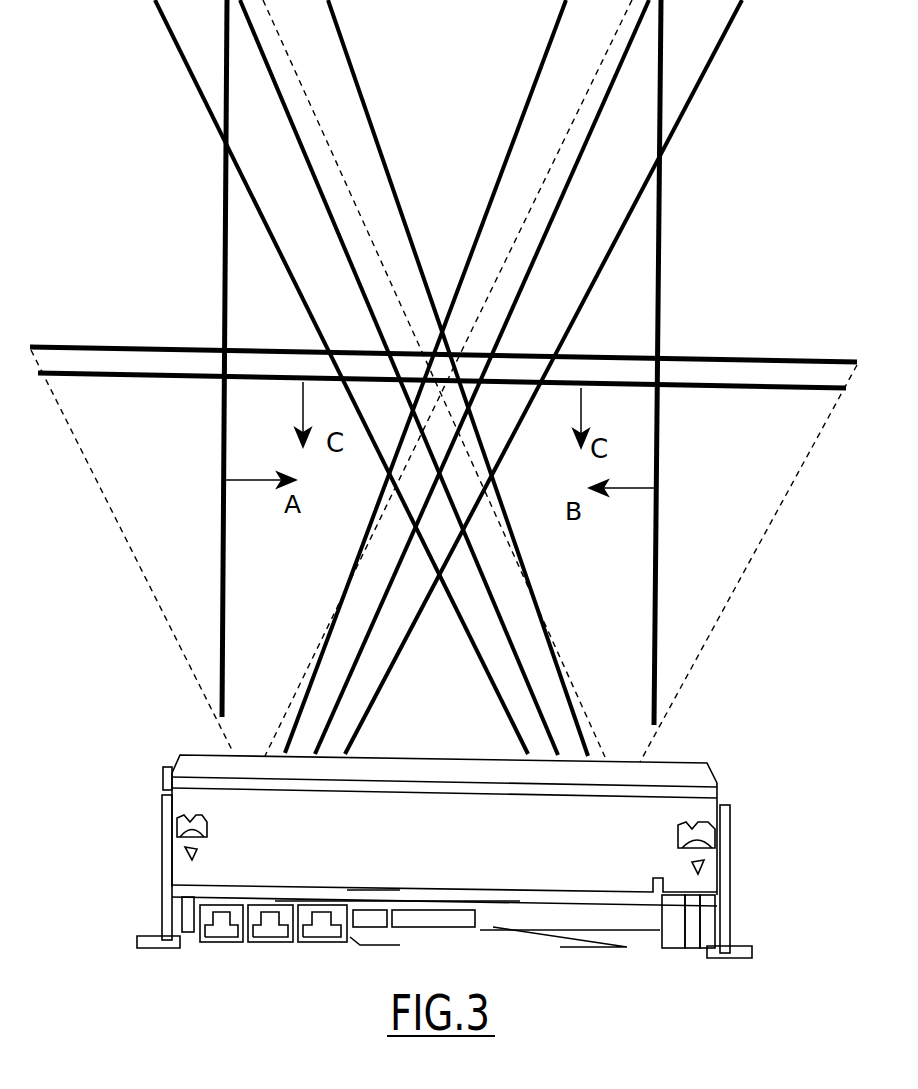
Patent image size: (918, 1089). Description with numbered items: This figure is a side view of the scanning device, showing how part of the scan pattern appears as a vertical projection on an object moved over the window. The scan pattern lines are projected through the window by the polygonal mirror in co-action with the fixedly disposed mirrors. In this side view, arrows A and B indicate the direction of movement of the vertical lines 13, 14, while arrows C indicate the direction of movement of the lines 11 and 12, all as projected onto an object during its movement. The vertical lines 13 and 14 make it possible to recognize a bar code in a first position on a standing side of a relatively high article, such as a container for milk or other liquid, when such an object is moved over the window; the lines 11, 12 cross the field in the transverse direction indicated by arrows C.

The scan line 11 is at (721, 356).
The scan line 12 is at (714, 391).
The vertical scan line 13 is at (656, 552).
The vertical scan line 14 is at (222, 548).